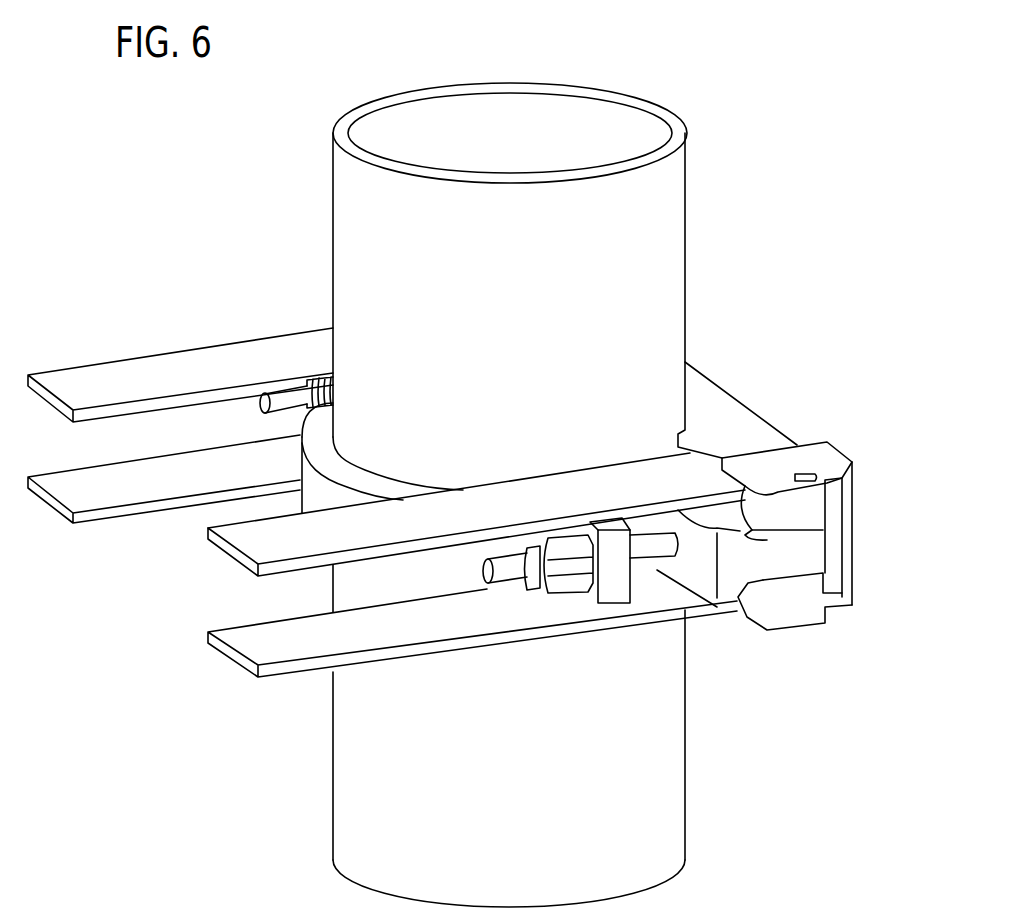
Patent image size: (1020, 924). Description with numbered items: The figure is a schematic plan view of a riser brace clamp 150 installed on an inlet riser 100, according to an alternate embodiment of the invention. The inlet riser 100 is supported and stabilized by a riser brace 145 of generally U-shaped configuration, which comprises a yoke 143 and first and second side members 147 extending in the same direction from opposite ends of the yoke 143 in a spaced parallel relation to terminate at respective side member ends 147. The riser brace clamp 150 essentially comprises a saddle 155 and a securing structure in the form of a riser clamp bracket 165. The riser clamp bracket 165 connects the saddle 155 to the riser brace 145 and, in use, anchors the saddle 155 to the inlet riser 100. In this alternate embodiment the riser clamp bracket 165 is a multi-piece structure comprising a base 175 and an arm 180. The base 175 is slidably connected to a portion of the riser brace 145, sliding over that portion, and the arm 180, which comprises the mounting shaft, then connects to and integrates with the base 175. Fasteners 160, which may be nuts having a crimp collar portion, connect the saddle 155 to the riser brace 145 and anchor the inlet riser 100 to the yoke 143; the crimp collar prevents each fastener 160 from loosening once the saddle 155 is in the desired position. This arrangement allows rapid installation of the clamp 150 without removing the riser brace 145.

The inlet riser 100 is at (333, 213).
The yoke 143 is at (722, 418).
The riser brace 145 is at (717, 360).
The side members 147 is at (260, 357).
The riser brace clamp 150 is at (158, 655).
The saddle 155 is at (226, 513).
The fasteners 160 is at (228, 423).
The riser clamp bracket 165 is at (767, 552).
The base 175 is at (810, 447).
The arm 180 is at (712, 575).